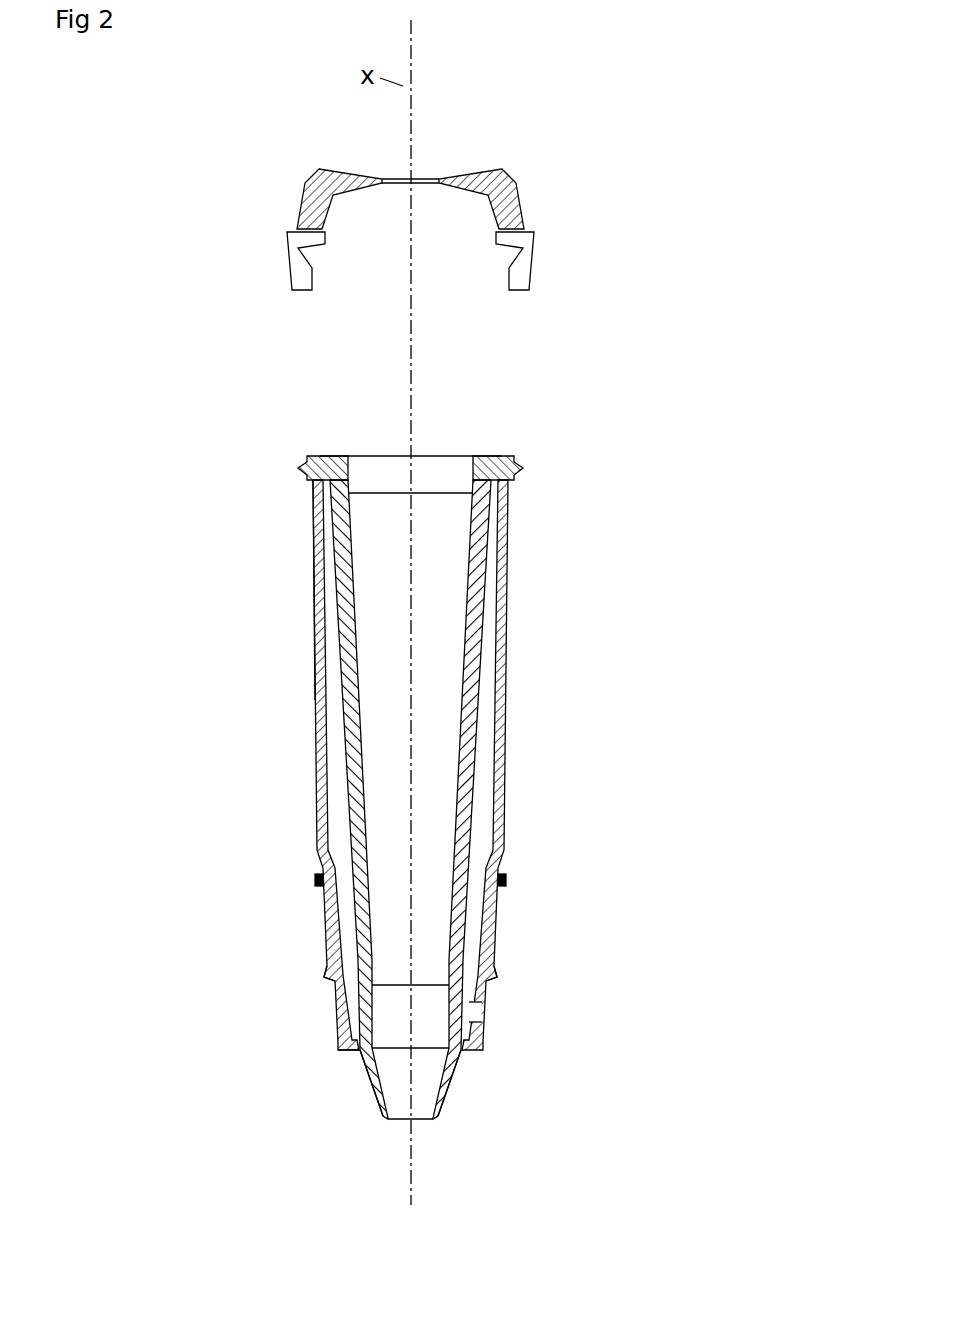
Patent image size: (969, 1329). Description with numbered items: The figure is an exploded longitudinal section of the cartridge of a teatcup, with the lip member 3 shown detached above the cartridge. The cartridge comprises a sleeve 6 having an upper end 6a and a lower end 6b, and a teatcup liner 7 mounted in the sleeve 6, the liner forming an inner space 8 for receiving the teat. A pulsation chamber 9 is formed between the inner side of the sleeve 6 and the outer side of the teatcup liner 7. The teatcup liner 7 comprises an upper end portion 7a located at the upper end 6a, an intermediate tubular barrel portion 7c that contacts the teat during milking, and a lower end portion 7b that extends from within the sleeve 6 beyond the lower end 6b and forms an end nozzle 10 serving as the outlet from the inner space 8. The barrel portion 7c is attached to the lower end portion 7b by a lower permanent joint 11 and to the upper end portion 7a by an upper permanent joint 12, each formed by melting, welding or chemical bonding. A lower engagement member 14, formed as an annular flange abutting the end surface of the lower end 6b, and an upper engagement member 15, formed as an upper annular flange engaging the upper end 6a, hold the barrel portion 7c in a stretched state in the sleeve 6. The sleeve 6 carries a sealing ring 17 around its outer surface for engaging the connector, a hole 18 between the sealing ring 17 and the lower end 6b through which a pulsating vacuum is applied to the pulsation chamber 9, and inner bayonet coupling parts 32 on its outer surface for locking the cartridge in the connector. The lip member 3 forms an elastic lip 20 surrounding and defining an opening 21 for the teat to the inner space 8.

The lip member 3 is at (563, 197).
The lip 20 is at (363, 172).
The opening 21 is at (427, 178).
The sleeve 6 is at (505, 568).
The upper end 6a is at (315, 505).
The lower end 6b is at (345, 1040).
The teatcup liner 7 is at (476, 722).
The upper end portion 7a is at (305, 465).
The lower end portion 7b is at (368, 1075).
The barrel portion 7c is at (350, 703).
The inner space 8 is at (443, 637).
The pulsation chamber 9 is at (492, 827).
The end nozzle 10 is at (383, 1113).
The lower permanent joint 11 is at (452, 986).
The upper permanent joint 12 is at (519, 467).
The lower engagement member 14 is at (458, 1052).
The upper engagement member 15 is at (507, 456).
The sealing ring 17 is at (315, 883).
The hole 18 is at (480, 1011).
The inner bayonet coupling parts 32 is at (326, 972).